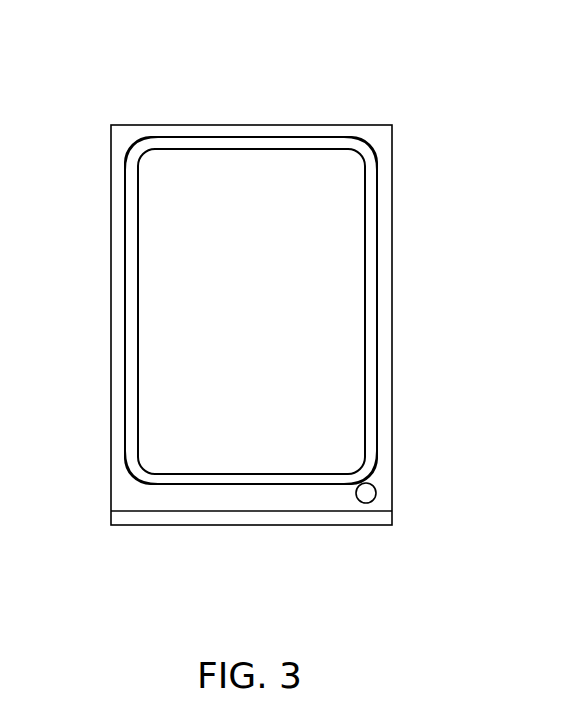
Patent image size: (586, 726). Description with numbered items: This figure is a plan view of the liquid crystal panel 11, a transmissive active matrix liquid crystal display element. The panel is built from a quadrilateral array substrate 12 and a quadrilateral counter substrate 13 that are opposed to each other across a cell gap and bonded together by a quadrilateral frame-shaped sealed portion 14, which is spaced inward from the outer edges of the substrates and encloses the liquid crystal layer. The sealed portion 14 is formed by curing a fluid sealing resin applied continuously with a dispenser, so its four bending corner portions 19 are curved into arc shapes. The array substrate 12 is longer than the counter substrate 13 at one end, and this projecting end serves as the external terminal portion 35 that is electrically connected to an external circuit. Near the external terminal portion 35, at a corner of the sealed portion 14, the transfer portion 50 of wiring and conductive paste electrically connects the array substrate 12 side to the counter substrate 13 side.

The liquid crystal panel 11 is at (347, 103).
The array substrate 12 is at (392, 516).
The counter substrate 13 is at (315, 508).
The sealed portion 14 is at (378, 268).
The corner portions 19 is at (135, 148).
The external terminal portion 35 is at (232, 517).
The transfer portion 50 is at (366, 503).